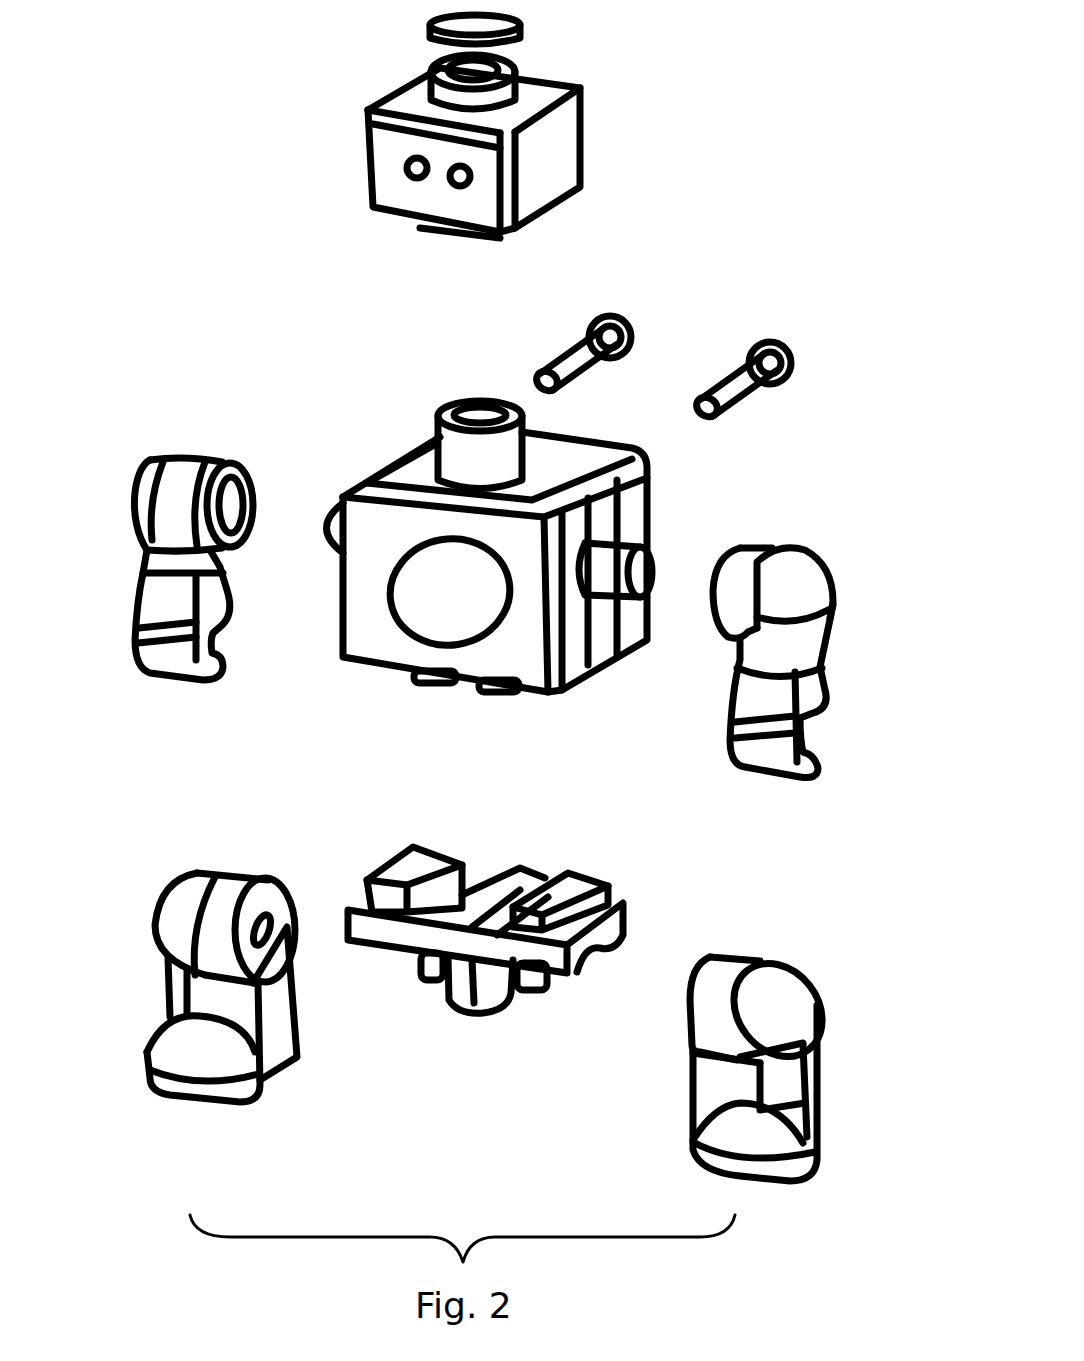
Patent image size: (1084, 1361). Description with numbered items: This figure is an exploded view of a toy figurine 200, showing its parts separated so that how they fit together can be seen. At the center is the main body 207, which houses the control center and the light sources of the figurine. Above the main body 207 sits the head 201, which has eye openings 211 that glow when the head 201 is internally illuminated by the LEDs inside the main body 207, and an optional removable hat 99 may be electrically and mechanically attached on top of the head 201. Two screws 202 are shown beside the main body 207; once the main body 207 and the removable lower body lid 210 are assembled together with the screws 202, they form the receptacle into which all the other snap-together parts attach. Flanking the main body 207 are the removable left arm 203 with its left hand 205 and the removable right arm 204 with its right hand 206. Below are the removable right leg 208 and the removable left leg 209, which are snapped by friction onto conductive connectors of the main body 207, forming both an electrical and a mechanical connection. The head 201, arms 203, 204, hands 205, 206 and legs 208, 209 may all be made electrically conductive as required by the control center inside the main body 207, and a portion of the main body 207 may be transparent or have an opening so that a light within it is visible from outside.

The toy figurine 200 is at (735, 100).
The removable hat 99 is at (522, 33).
The head 201 is at (420, 105).
The eye openings 211 is at (450, 178).
The screws 202 is at (630, 318).
The main body 207 is at (392, 452).
The removable right arm 204 is at (160, 490).
The right hand 206 is at (153, 660).
The removable left arm 203 is at (777, 585).
The left hand 205 is at (817, 753).
The removable right leg 208 is at (185, 915).
The removable left leg 209 is at (757, 987).
The removable lower body lid 210 is at (473, 943).